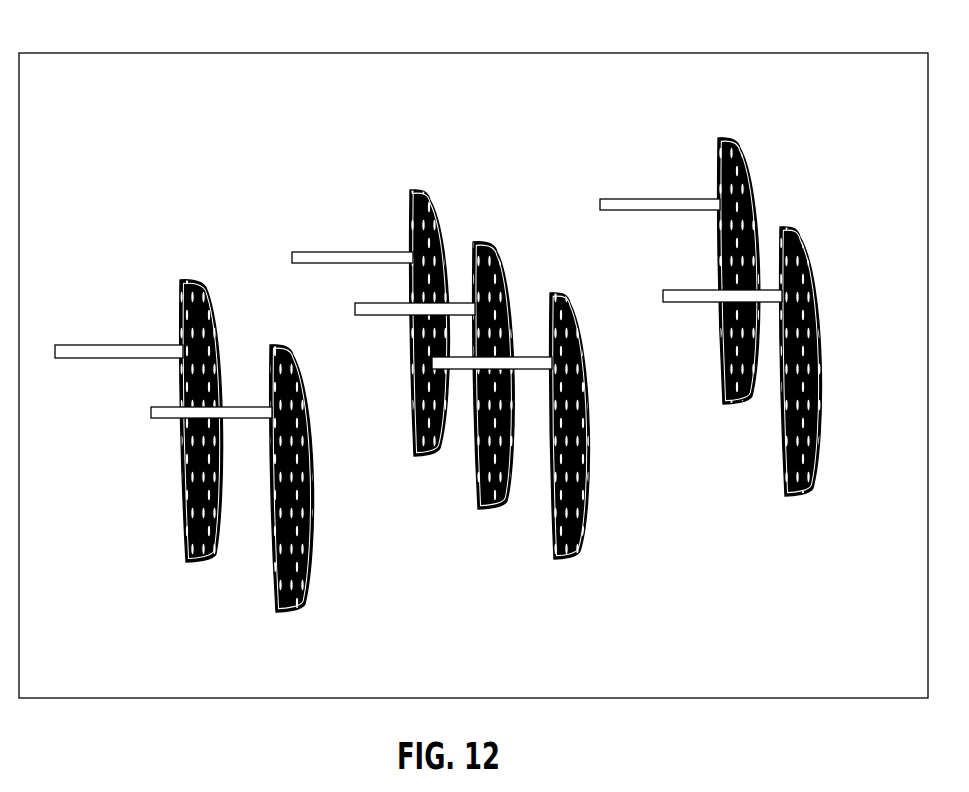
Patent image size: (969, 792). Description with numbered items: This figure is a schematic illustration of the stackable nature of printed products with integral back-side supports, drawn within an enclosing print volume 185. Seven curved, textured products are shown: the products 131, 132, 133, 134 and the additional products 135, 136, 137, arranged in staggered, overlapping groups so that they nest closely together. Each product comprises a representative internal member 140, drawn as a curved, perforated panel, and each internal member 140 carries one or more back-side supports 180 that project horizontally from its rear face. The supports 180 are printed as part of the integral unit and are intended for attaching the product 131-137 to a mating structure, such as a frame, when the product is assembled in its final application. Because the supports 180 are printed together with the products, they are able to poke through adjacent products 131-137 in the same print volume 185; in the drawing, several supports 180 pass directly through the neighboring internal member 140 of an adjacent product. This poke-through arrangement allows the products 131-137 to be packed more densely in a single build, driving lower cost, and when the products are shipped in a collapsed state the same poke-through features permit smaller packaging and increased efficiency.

The housing 185 is at (190, 51).
The product 131 is at (192, 566).
The product 132 is at (282, 616).
The product 133 is at (413, 188).
The product 134 is at (479, 240).
The additional product 135 is at (562, 563).
The additional product 136 is at (724, 134).
The additional product 137 is at (797, 224).
The internal member 140 is at (491, 375).
The back-side support 180 is at (120, 360).